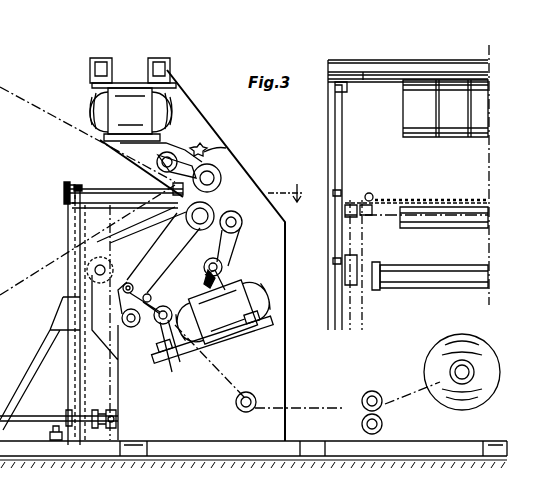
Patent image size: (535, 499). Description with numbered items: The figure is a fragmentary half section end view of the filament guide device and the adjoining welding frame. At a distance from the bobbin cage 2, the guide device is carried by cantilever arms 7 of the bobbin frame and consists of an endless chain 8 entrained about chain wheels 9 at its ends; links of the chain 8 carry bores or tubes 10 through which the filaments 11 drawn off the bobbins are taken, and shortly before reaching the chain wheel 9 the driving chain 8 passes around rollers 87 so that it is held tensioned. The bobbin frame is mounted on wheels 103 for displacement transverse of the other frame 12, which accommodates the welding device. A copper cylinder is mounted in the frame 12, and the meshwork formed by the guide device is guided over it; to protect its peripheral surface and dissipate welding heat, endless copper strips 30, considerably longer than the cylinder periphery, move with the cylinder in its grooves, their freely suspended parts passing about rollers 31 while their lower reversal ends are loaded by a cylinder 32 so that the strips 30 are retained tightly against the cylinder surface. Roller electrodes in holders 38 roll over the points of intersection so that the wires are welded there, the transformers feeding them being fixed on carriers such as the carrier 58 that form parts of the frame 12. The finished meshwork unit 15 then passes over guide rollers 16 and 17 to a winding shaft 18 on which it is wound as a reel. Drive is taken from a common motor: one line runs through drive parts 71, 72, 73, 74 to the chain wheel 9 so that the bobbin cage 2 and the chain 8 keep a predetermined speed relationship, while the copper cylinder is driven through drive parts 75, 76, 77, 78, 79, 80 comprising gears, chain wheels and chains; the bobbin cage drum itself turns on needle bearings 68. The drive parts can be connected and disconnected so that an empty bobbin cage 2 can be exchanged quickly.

The bobbin cage 2 is at (285, 189).
The cantilever arms 7 is at (98, 206).
The chain 8 is at (460, 194).
The chain wheels 9 is at (362, 196).
The bores or tubes 10 is at (430, 196).
The filaments 11 is at (34, 108).
The frame 12 is at (265, 432).
The meshwork unit 15 is at (242, 223).
The guide roller 16 is at (295, 392).
The guide roller 17 is at (362, 399).
The winding shaft 18 is at (434, 354).
The copper strips 30 is at (224, 270).
The rollers 31 is at (155, 287).
The cylinder 32 is at (135, 326).
The holders 38 is at (208, 137).
The carrier 58 is at (235, 362).
The needle bearings 68 is at (9, 186).
The drive part 71 is at (64, 412).
The drive part 72 is at (66, 383).
The drive part 73 is at (67, 185).
The drive part 74 is at (93, 186).
The drive part 75 is at (104, 410).
The drive part 76 is at (118, 426).
The drive part 77 is at (90, 341).
The drive part 78 is at (70, 275).
The drive part 79 is at (133, 196).
The drive part 80 is at (220, 178).
The rollers 87 is at (373, 185).
The wheels 103 is at (52, 442).